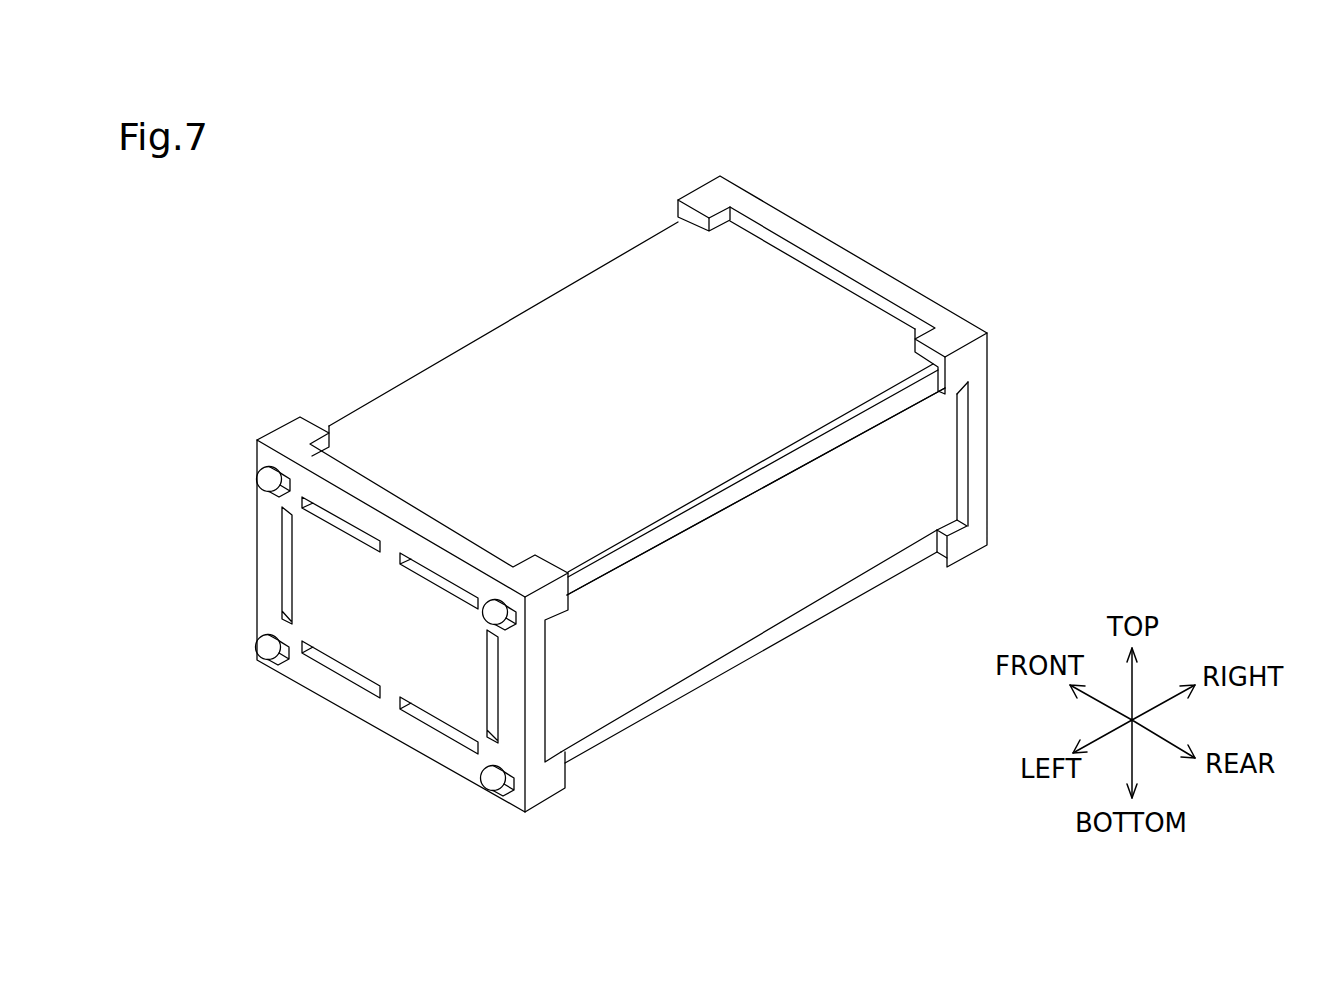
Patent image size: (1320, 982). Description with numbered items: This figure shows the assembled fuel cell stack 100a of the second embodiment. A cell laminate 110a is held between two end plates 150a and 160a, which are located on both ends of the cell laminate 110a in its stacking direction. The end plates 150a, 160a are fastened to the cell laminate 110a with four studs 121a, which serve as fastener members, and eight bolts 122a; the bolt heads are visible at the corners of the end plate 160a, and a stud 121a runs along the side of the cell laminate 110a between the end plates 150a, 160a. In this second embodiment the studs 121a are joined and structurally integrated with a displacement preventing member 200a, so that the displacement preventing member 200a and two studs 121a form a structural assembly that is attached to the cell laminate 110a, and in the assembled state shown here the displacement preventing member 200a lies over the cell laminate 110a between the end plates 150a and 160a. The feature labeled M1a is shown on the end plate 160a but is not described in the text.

The fuel cell stack 100a is at (893, 152).
The end plate 150a is at (812, 243).
The end plate 160a is at (303, 433).
The displacement preventing member 200a is at (442, 430).
The cell laminate 110a is at (617, 663).
The stud 121a is at (690, 512).
The bolt 122a is at (258, 476).
The slot M1a is at (288, 567).